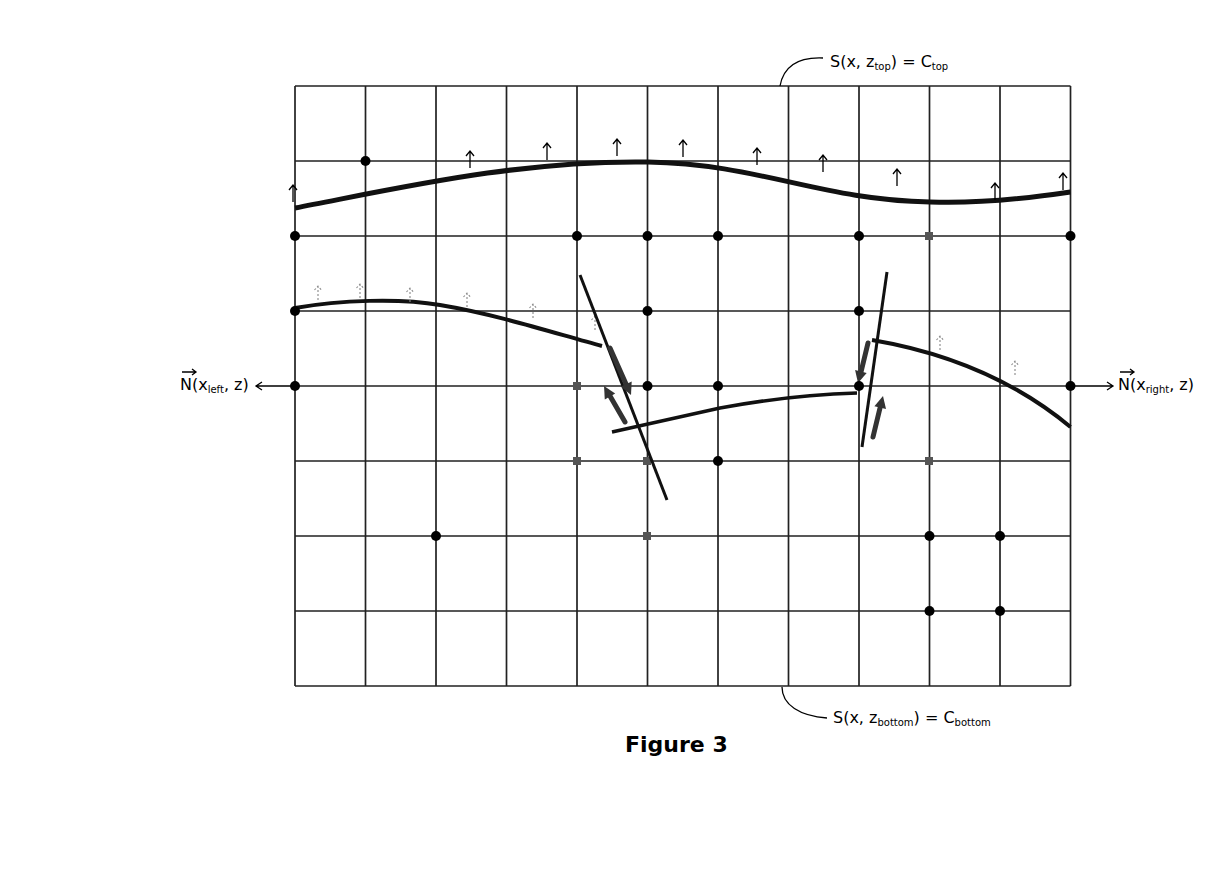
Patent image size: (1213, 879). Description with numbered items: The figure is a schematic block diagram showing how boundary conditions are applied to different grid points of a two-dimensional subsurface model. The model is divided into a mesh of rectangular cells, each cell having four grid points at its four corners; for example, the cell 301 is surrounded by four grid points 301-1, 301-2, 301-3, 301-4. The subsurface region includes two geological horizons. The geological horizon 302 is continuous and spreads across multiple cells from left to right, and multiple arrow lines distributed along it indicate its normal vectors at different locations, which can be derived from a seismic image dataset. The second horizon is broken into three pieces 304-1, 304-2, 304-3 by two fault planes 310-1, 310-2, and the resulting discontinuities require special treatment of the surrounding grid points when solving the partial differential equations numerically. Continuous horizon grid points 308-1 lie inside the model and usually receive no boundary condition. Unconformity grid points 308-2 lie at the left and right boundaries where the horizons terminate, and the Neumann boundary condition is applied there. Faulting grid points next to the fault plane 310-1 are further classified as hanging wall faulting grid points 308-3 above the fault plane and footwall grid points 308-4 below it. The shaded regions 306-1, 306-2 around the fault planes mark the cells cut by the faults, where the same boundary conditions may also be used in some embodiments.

The geological horizon 302 is at (940, 190).
The first piece of geological horizon 304-1 is at (432, 307).
The second piece of geological horizon 304-2 is at (750, 393).
The third piece of geological horizon 304-3 is at (962, 352).
The first fault/discontinuity grid region node 306-1 is at (652, 335).
The second fault/discontinuity grid region node 306-2 is at (937, 287).
The continuous horizon grid points 308-1 is at (366, 158).
The unconformity grid points 308-2 is at (293, 237).
The hanging wall faulting grid points 308-3 is at (648, 233).
The footwall faulting grid points 308-4 is at (577, 463).
The first fault plane 310-1 is at (588, 302).
The second fault plane 310-2 is at (884, 296).
The cell 301 is at (983, 578).
The grid point 301-1 is at (935, 534).
The grid point 301-2 is at (1005, 534).
The grid point 301-3 is at (935, 609).
The grid point 301-4 is at (1005, 609).